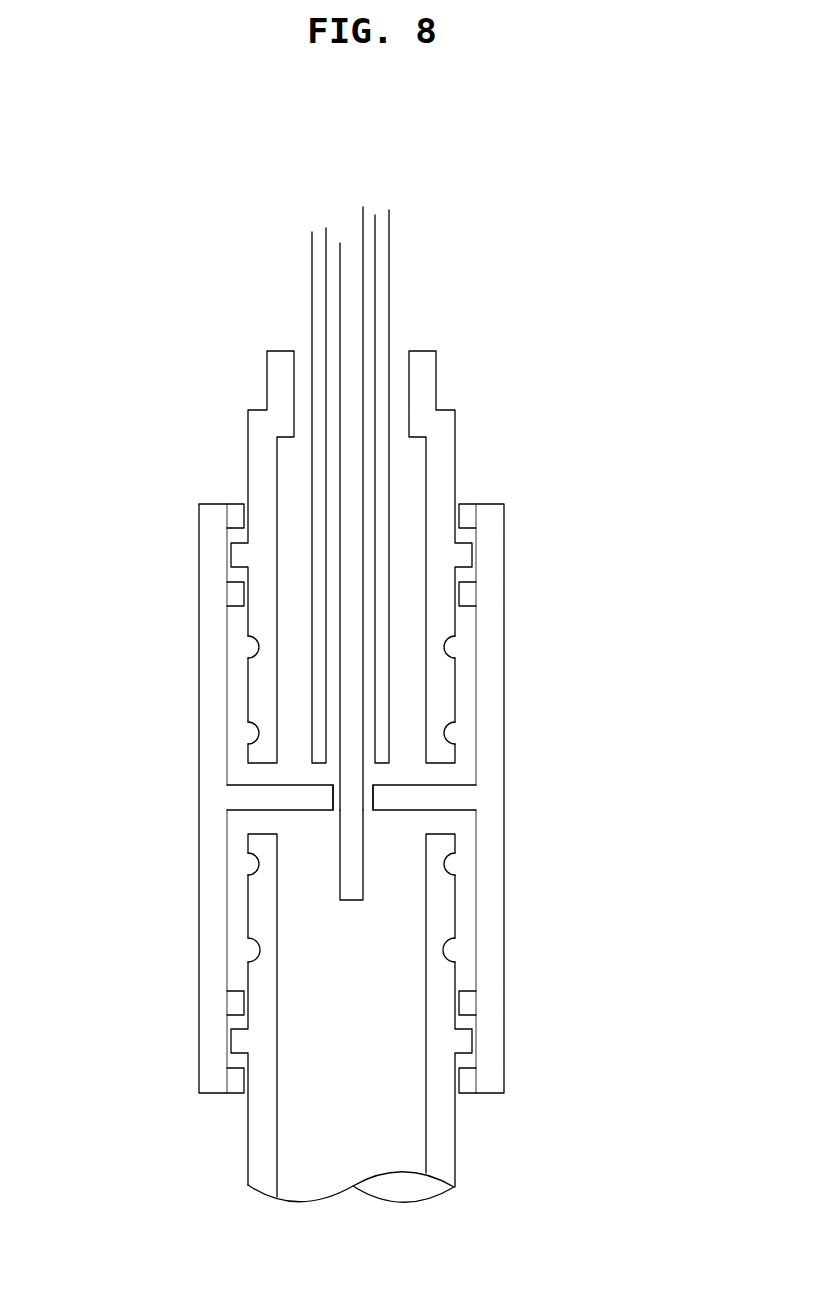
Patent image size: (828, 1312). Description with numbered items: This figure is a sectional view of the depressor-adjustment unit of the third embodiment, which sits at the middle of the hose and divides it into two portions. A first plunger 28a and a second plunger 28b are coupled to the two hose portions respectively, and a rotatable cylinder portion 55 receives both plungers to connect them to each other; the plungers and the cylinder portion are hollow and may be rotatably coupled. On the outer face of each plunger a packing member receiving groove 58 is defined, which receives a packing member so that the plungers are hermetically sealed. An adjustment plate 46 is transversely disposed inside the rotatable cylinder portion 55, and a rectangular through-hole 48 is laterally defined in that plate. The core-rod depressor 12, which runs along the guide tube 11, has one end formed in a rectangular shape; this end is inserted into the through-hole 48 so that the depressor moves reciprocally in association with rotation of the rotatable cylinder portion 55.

The guide tube 11 is at (402, 313).
The core-rod depressor 12 is at (369, 201).
The first plunger 28a is at (463, 690).
The second plunger 28b is at (463, 903).
The adjustment plate 46 is at (243, 797).
The rectangular through-hole 48 is at (335, 812).
The rotatable cylinder portion 55 is at (534, 805).
The packing member receiving groove 58 is at (452, 645).